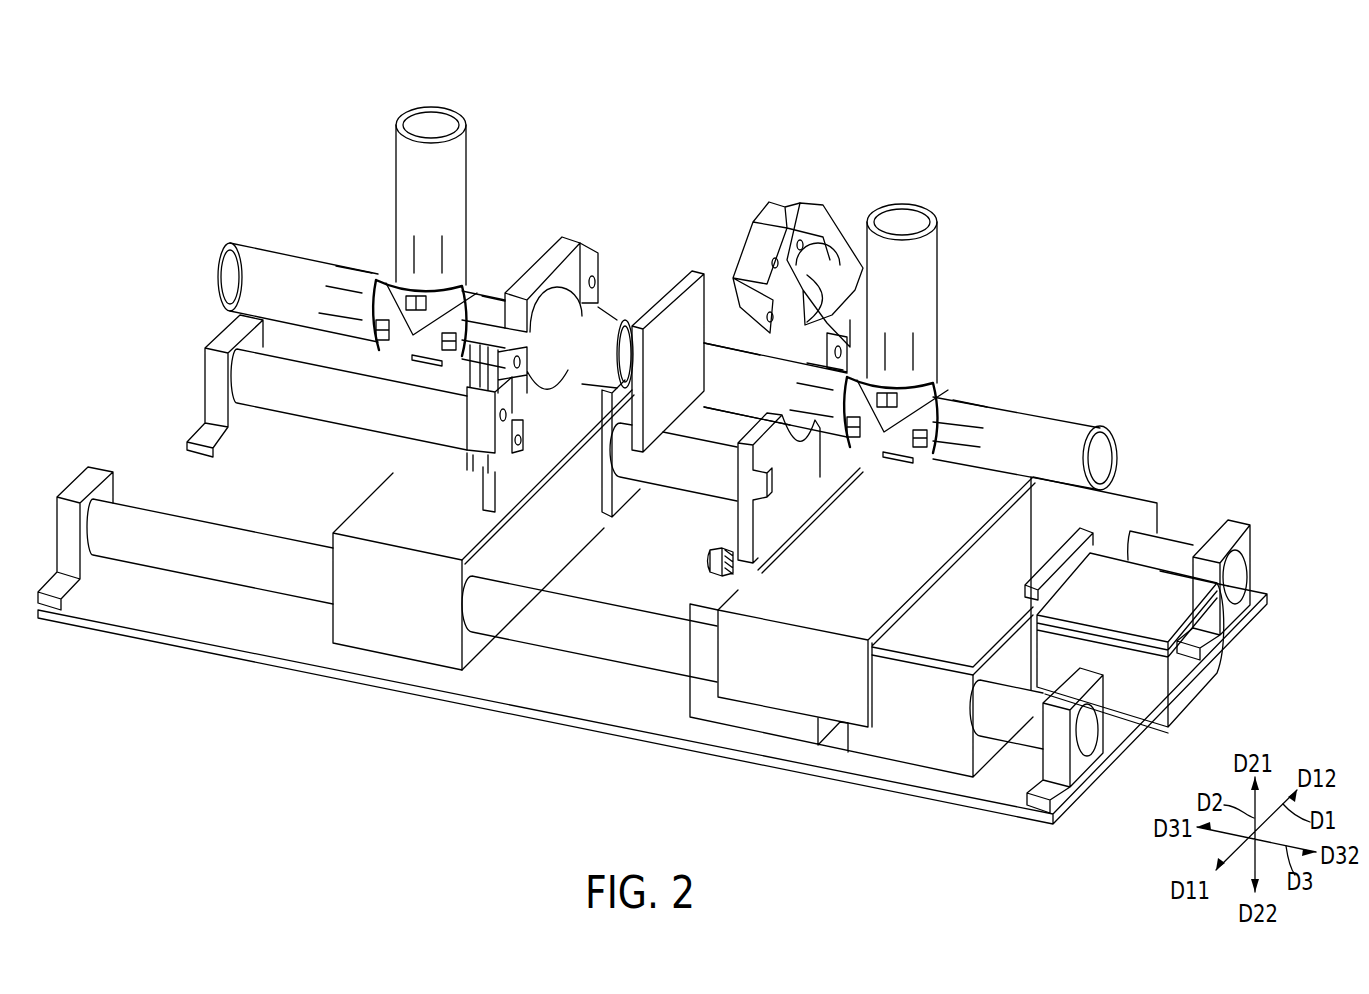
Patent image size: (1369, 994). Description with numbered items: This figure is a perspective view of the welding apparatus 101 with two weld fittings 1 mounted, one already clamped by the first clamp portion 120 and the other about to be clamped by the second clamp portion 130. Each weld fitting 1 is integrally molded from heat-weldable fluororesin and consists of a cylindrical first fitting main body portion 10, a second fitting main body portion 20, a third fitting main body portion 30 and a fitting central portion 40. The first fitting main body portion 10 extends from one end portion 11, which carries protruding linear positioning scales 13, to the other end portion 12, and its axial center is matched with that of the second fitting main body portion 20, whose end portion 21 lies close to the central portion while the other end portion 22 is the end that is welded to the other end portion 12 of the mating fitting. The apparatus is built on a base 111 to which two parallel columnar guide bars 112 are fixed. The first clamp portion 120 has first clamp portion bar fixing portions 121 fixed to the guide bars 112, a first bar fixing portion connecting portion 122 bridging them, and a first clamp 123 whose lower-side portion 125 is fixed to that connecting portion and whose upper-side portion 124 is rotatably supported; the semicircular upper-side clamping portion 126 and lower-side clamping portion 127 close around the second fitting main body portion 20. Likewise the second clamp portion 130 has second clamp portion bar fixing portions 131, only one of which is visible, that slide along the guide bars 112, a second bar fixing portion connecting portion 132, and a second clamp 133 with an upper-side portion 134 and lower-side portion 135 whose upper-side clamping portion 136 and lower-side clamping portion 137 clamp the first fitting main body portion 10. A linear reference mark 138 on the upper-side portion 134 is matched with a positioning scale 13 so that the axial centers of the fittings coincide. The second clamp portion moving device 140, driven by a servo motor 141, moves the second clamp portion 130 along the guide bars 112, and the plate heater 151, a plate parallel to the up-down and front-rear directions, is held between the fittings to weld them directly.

The weld fitting 1 is at (669, 285).
The first fitting main body portion 10 is at (300, 240).
The one end portion of the first fitting main body portion 11 is at (847, 440).
The other end portion of the first fitting main body portion 12 is at (706, 396).
The positioning scales 13 is at (497, 300).
The second fitting main body portion 20 is at (632, 305).
The end portion of the second fitting main body portion 21 is at (430, 420).
The other end portion of the second fitting main body portion 22 is at (625, 357).
The third fitting main body portion 30 is at (450, 88).
The fitting central portion 40 is at (388, 380).
The welding apparatus 101 is at (1215, 435).
The base 111 is at (590, 733).
The guide bars 112 is at (290, 392).
The first clamp portion 120 is at (561, 354).
The first clamp portion bar fixing portions 121 is at (400, 650).
The first bar fixing portion connecting portion 122 is at (507, 527).
The first clamp 123 is at (604, 240).
The upper-side portion 124 is at (545, 265).
The lower-side portion 125 is at (533, 470).
The upper-side clamping portion 126 is at (563, 313).
The lower-side clamping portion 127 is at (563, 370).
The second clamp portion 130 is at (900, 456).
The second clamp portion bar fixing portions 131 is at (777, 727).
The second bar fixing portion connecting portion 132 is at (713, 583).
The second clamp 133 is at (870, 308).
The upper-side portion 134 is at (836, 222).
The lower-side portion 135 is at (797, 500).
The upper-side clamping portion 136 is at (818, 295).
The lower-side clamping portion 137 is at (817, 427).
The reference mark 138 is at (830, 273).
The second clamp portion moving device 140 is at (1176, 632).
The servo motor 141 is at (1197, 700).
The plate heater 151 is at (688, 272).